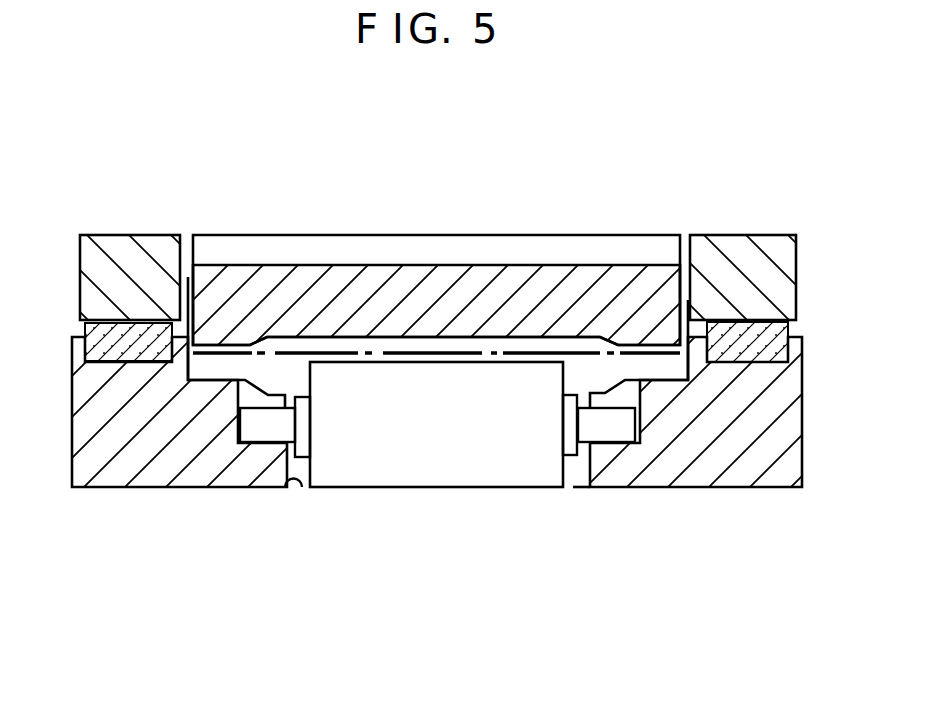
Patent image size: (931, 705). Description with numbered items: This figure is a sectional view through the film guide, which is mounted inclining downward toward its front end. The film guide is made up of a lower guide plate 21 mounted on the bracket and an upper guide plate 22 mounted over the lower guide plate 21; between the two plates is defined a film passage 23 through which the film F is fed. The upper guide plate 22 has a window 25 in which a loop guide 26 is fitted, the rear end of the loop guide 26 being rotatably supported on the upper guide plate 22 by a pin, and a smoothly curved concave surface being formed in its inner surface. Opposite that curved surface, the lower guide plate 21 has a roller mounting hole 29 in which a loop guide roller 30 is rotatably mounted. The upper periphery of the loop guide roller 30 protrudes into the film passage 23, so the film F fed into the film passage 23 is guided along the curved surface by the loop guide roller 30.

The lower guide plate 21 is at (162, 473).
The upper guide plate 22 is at (122, 255).
The film passage 23 is at (662, 365).
The window 25 is at (188, 280).
The loop guide 26 is at (393, 278).
The roller mounting hole 29 is at (302, 487).
The loop guide roller 30 is at (452, 473).
The film F is at (470, 350).